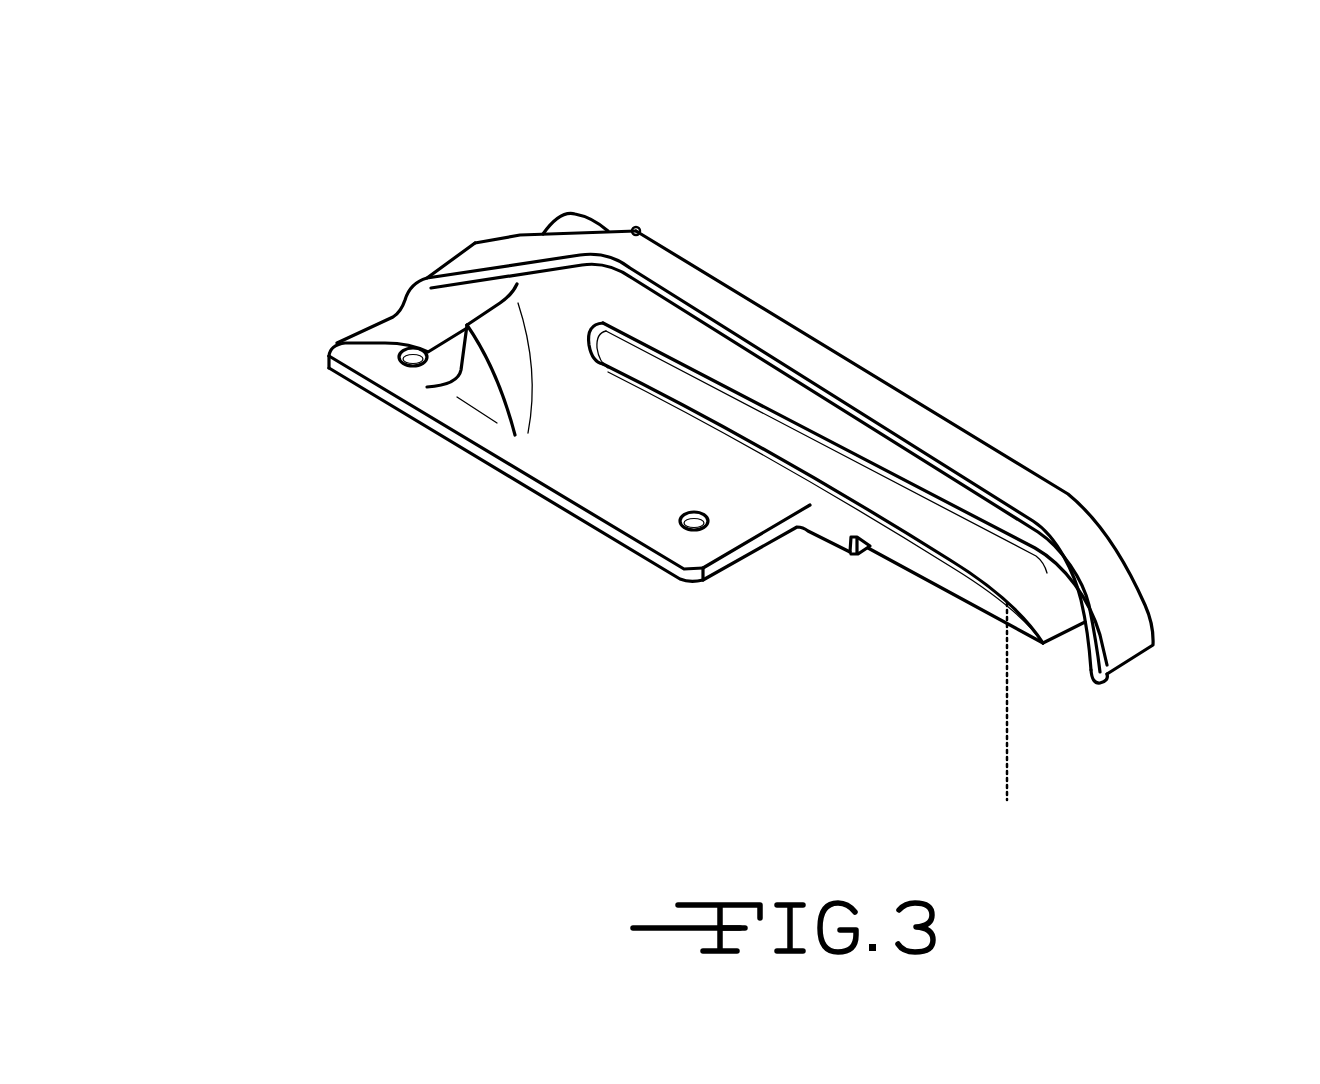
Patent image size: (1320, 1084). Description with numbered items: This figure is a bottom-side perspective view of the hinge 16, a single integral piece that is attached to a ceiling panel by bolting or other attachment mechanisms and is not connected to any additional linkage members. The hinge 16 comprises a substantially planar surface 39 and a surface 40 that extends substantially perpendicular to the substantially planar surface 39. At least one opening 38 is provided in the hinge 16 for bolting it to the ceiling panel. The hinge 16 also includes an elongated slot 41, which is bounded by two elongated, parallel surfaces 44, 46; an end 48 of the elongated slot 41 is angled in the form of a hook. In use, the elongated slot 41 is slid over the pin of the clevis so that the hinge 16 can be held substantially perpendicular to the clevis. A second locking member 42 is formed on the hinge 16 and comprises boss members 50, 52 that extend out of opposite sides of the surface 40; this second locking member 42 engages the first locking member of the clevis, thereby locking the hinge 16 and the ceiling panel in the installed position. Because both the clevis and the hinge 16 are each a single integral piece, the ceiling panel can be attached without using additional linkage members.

The hinge 16 is at (440, 460).
The opening 38 is at (337, 343).
The substantially planar surface 39 is at (567, 443).
The surface 40 is at (552, 305).
The elongated slot 41 is at (912, 518).
The second locking member 42 is at (636, 228).
The elongated parallel surface 44 is at (750, 318).
The elongated parallel surface 46 is at (1017, 577).
The end of the elongated slot 48 is at (1112, 622).
The boss member 50 is at (510, 365).
The boss member 52 is at (640, 231).